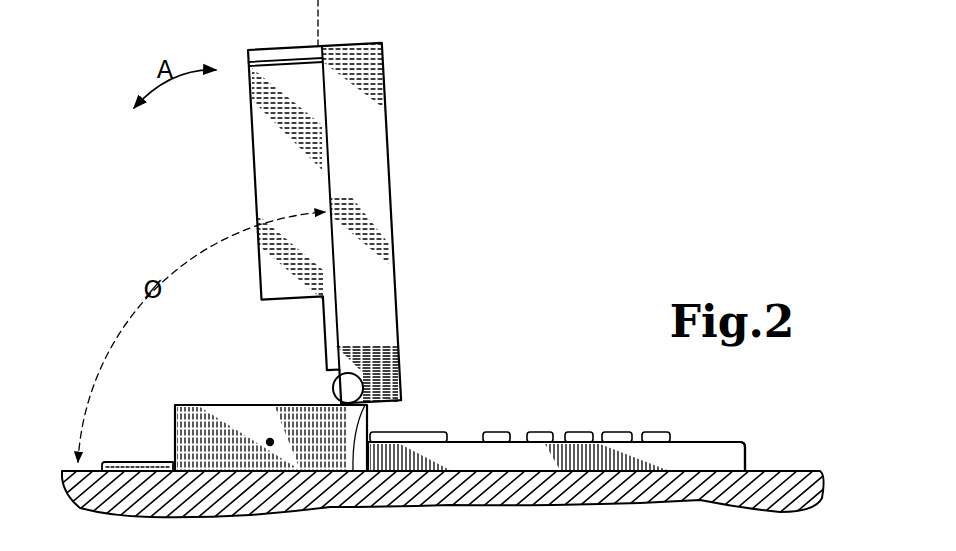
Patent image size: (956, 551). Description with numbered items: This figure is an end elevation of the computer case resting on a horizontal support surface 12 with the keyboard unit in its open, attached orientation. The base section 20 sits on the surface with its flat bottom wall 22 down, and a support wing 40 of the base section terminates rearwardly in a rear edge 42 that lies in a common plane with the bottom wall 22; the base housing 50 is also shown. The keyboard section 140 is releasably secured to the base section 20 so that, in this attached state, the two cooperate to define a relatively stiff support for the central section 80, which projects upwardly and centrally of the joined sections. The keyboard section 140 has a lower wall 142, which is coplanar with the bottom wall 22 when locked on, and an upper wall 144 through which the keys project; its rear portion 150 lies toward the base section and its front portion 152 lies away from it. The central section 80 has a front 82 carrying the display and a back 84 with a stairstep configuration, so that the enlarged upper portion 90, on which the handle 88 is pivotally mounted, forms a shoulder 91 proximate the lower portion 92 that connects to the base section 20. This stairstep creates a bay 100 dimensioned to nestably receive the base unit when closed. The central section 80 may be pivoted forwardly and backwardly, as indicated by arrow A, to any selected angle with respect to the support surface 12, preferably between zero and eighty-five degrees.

The horizontal support surface 12 is at (767, 470).
The base section 20 is at (204, 387).
The flat bottom wall 22 is at (384, 377).
The support wing 40 is at (162, 460).
The rear edge 42 is at (98, 463).
The base housing 50 is at (270, 440).
The central section 80 is at (315, 202).
The front 82 is at (387, 197).
The back 84 is at (240, 146).
The handle 88 is at (278, 50).
The enlarged upper portion 90 is at (307, 105).
The shoulder 91 is at (288, 293).
The lower portion 92 is at (365, 285).
The bay 100 is at (284, 328).
The keyboard section 140 is at (573, 357).
The lower wall 142 is at (565, 470).
The upper wall 144 is at (462, 440).
The rear portion 150 is at (408, 442).
The front portion 152 is at (697, 450).